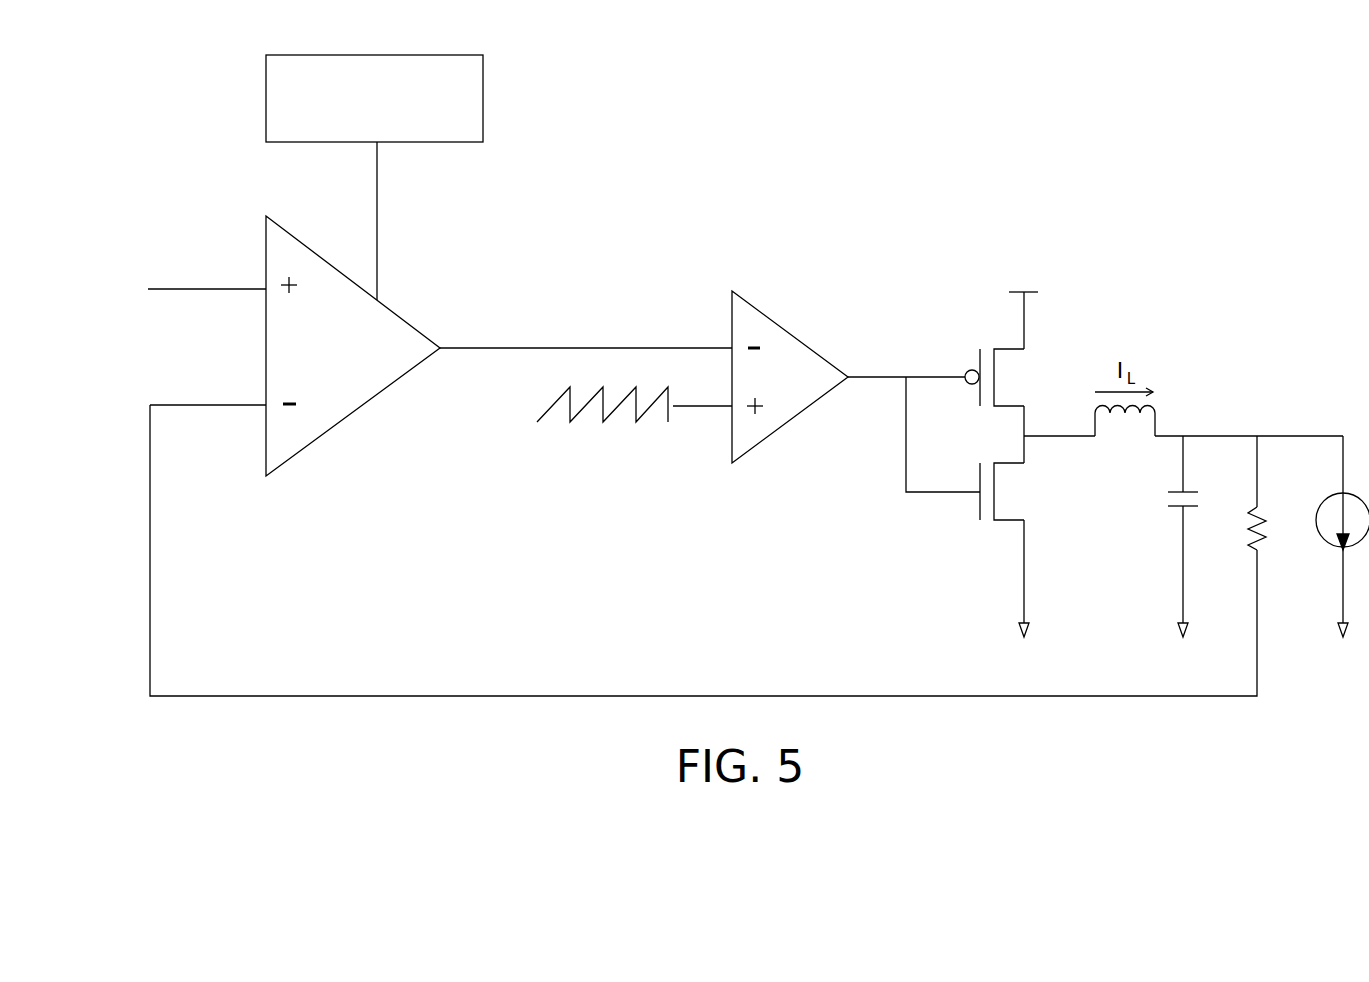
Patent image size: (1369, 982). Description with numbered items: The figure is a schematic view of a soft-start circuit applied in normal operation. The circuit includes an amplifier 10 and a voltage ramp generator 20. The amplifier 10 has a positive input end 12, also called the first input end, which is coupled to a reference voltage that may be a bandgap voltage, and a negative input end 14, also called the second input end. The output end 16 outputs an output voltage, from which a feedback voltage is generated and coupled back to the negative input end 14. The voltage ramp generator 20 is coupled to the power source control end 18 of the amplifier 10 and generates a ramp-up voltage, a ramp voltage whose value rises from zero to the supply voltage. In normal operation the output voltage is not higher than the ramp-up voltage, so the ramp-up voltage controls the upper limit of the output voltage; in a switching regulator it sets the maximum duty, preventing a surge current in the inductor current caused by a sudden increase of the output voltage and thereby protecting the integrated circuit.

The amplifier 10 is at (321, 363).
The positive input end 12 is at (266, 284).
The negative input end 14 is at (266, 400).
The output end 16 is at (441, 350).
The power source control end 18 is at (380, 299).
The voltage ramp generator 20 is at (362, 131).